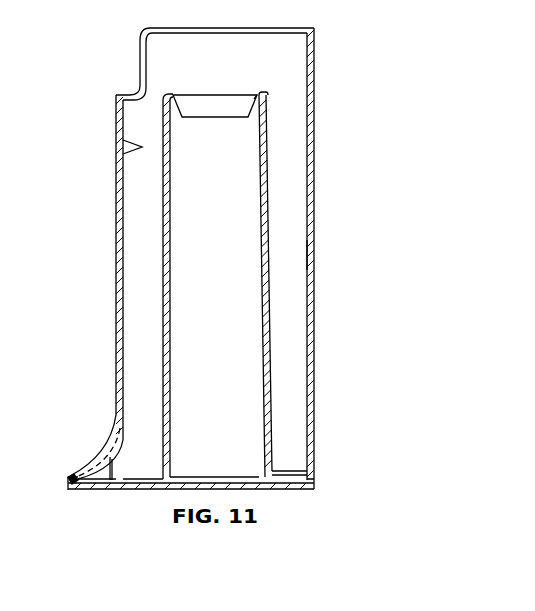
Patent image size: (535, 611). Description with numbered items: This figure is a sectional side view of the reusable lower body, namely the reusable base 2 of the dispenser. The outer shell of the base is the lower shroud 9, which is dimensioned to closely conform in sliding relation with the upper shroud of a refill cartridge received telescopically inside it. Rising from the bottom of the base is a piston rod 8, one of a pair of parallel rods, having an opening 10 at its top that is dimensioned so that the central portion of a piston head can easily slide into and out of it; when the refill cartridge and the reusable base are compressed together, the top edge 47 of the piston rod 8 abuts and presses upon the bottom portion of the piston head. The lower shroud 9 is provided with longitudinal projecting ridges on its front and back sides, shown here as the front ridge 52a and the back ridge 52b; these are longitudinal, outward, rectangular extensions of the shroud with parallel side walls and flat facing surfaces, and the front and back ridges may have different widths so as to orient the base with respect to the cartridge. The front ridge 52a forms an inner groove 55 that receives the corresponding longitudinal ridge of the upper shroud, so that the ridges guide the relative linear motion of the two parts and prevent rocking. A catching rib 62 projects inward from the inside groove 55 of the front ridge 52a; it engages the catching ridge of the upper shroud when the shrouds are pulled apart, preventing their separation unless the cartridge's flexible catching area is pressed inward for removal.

The reusable base 2 is at (318, 103).
The piston rod 8 is at (267, 145).
The lower shroud 9 is at (310, 432).
The opening 10 is at (220, 117).
The edge 47 is at (173, 95).
The front longitudinal projecting ridge 52a is at (118, 308).
The back longitudinal projecting ridge 52b is at (312, 258).
The inner groove 55 is at (133, 383).
The catching rib 62 is at (142, 147).